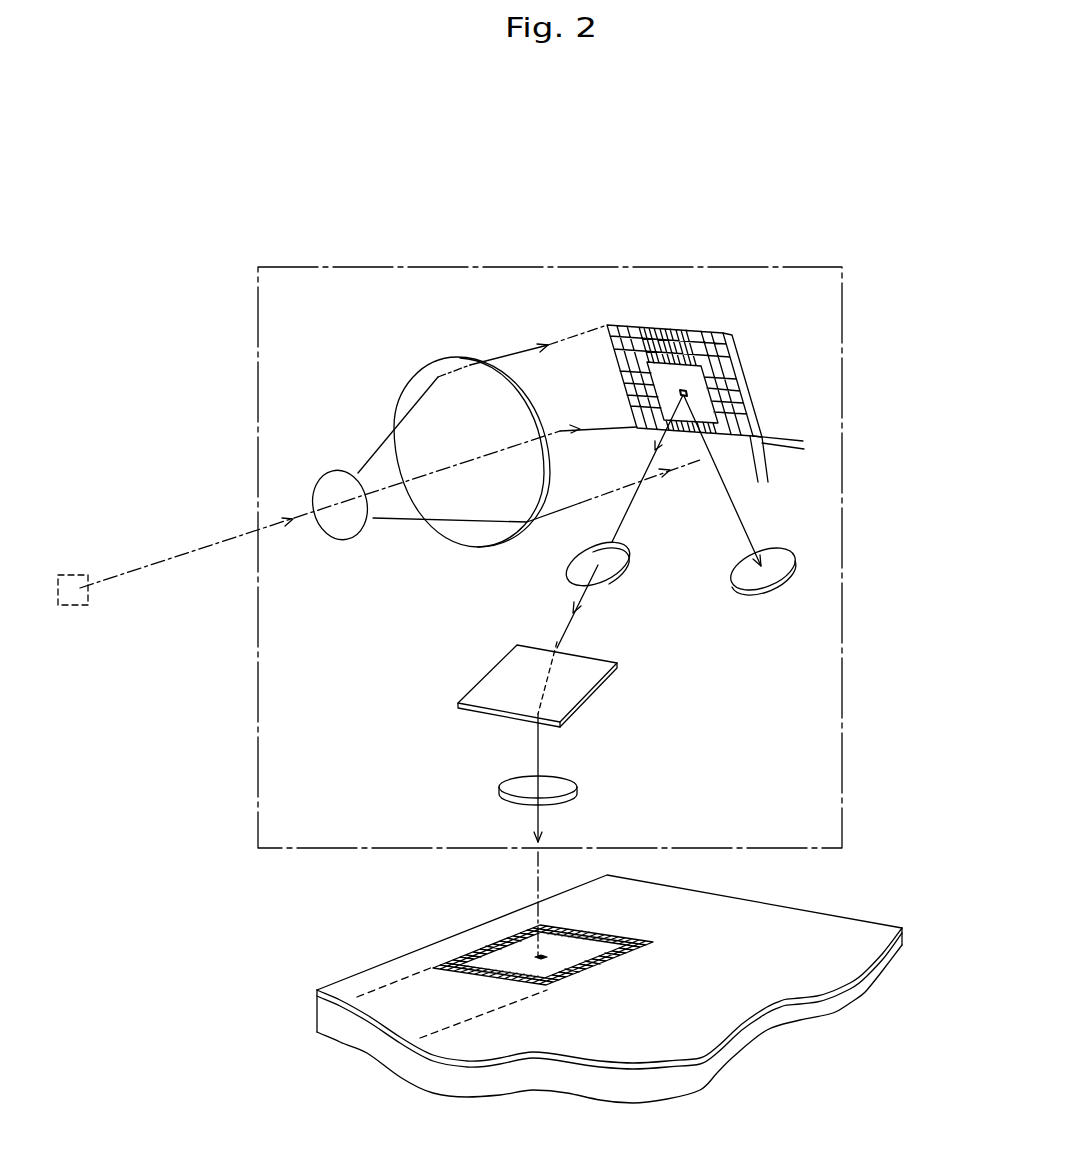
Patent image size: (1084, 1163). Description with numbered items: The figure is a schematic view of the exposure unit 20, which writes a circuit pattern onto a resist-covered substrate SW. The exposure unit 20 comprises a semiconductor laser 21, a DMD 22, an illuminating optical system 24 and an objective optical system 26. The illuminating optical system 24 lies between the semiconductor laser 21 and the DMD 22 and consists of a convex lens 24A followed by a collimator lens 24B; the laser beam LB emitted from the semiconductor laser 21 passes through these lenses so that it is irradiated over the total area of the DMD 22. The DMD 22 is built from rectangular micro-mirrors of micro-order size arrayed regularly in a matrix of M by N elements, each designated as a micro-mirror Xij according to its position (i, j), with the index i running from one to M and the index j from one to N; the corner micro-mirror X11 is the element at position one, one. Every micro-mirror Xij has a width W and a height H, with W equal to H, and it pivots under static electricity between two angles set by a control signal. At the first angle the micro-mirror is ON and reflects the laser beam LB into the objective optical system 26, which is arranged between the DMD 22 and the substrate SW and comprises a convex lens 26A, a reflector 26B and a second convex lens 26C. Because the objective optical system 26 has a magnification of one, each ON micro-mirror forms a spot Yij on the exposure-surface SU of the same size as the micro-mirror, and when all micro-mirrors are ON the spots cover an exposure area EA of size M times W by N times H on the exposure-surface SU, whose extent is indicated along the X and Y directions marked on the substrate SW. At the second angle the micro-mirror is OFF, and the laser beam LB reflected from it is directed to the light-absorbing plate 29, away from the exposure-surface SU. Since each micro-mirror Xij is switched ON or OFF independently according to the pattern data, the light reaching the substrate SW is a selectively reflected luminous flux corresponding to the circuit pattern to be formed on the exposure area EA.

The exposure unit 20 is at (575, 253).
The semiconductor laser 21 is at (78, 573).
The DMD (Digital Micro-mirror Device) 22 is at (637, 428).
The illuminating optical system 24 is at (420, 461).
The convex lens 24A is at (330, 468).
The collimator lens 24B is at (417, 373).
The objective optical system 26 is at (599, 672).
The convex lens 26A is at (613, 586).
The reflector 26B is at (570, 688).
The convex lens 26C is at (595, 793).
The light-absorbing plate 29 is at (767, 596).
The laser beam LB is at (300, 510).
The substrate SW is at (769, 1035).
The exposure-surface SU is at (870, 930).
The exposure area EA is at (665, 943).
The number of micro-mirrors in one array direction M is at (724, 328).
The number of micro-mirrors in the other array direction N is at (741, 335).
The height of micro-mirror H is at (786, 425).
The width of micro-mirror W is at (787, 481).
The micro-mirror Xij is at (724, 395).
The corner micromirror X11 is at (748, 445).
The spot Yij is at (548, 957).
The X direction X is at (860, 940).
The Y direction Y is at (860, 940).
The position index i is at (592, 303).
The position index j is at (600, 308).